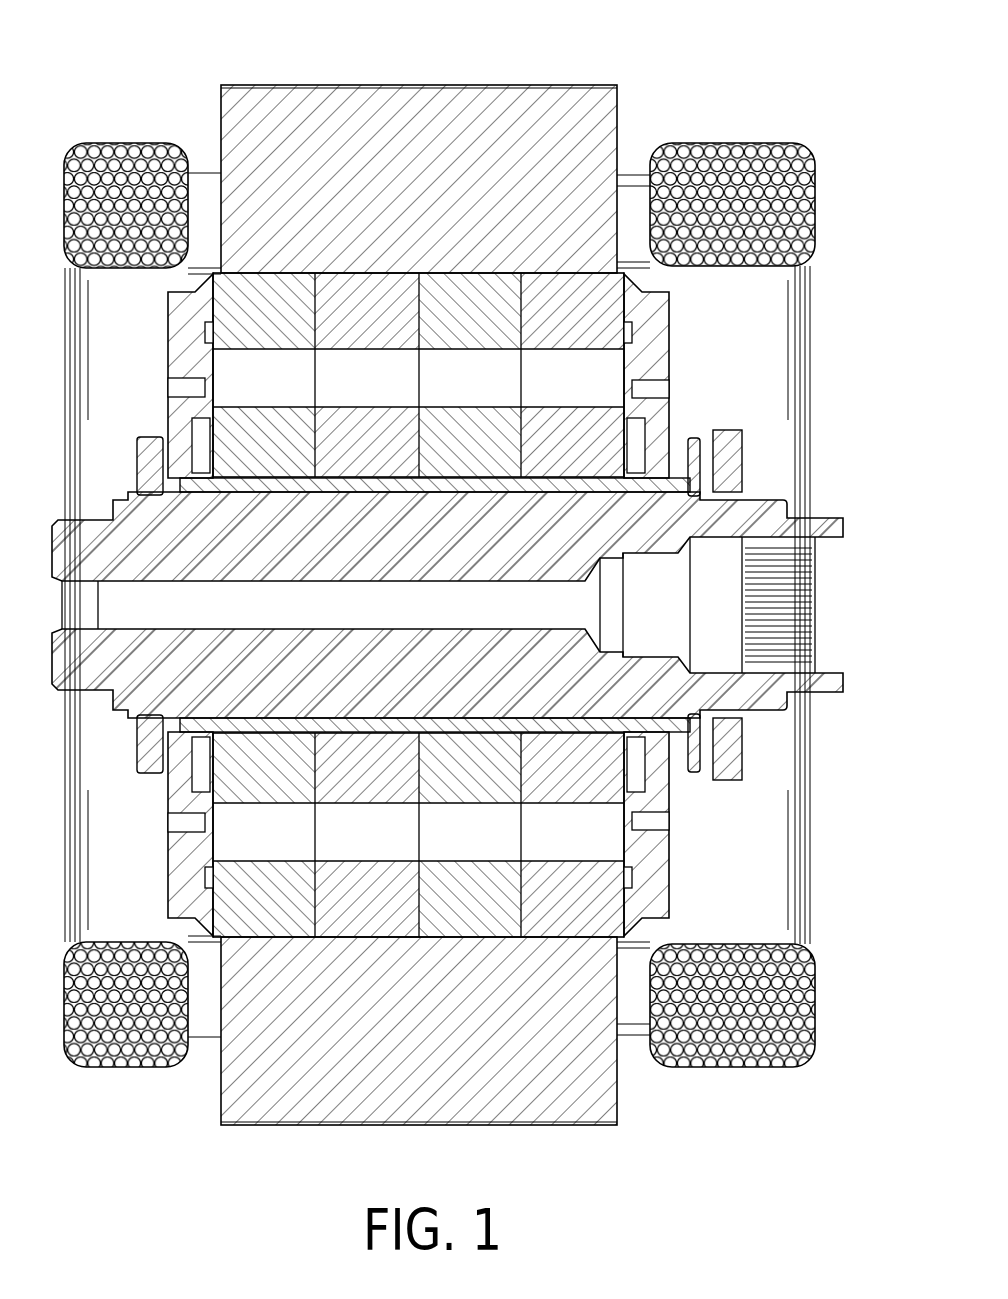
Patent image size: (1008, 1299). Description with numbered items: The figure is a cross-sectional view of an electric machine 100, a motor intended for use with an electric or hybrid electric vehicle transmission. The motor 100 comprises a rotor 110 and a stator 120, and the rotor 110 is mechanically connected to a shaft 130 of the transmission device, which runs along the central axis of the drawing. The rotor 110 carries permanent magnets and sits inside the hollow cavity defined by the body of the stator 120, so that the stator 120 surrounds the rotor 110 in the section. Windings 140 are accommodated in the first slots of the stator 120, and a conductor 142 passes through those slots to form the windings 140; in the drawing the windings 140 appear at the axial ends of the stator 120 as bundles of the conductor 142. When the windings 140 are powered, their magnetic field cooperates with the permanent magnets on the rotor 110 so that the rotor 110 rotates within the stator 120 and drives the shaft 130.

The electric machine 100 is at (462, 565).
The rotor 110 is at (591, 297).
The stator 120 is at (591, 105).
The shaft 130 is at (762, 508).
The windings 140 is at (465, 579).
The conductor 142 is at (765, 147).